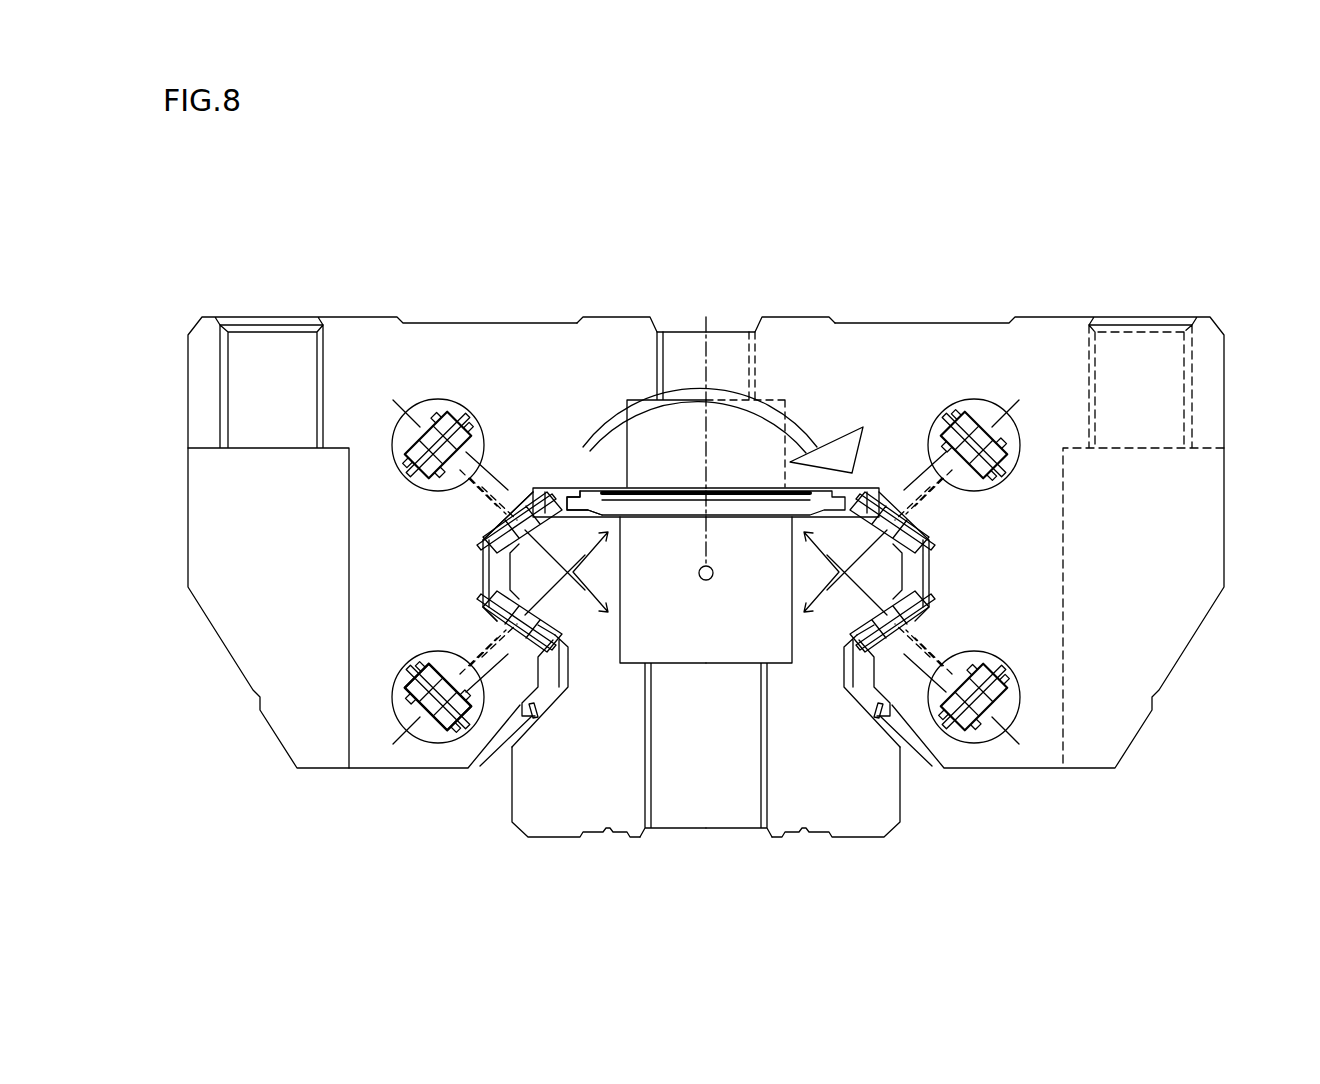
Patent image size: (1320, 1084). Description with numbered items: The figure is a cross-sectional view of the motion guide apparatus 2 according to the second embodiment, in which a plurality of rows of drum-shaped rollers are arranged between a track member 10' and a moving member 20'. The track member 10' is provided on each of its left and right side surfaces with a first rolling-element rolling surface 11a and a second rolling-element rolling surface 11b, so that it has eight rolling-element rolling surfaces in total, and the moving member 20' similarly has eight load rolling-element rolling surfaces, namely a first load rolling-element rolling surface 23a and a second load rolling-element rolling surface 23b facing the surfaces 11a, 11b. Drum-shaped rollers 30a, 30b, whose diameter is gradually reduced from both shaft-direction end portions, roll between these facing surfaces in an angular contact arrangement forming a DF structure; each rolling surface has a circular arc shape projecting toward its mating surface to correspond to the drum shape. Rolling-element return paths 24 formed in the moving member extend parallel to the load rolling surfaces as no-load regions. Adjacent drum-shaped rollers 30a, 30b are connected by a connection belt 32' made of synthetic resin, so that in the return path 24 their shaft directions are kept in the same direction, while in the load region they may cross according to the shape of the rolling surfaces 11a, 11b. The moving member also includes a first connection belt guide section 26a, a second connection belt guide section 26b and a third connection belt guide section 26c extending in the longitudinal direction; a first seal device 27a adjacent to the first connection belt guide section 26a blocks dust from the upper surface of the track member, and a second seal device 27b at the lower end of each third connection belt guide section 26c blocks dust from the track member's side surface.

The motion guide apparatus 2 is at (428, 198).
The track member 10' is at (765, 612).
The moving member 20' is at (743, 542).
The first rolling-element rolling surface 11a is at (545, 613).
The second rolling-element rolling surface 11b is at (532, 617).
The first load rolling-element rolling surface 23a is at (527, 650).
The second load rolling-element rolling surface 23b is at (410, 710).
The rolling-element return path 24 is at (433, 727).
The first connection belt guide section 26a is at (570, 487).
The second connection belt guide section 26b is at (483, 562).
The third connection belt guide section 26c is at (555, 670).
The first seal device 27a is at (628, 487).
The second seal device 27b is at (520, 718).
The drum-shaped roller 30a is at (977, 400).
The drum-shaped roller 30b is at (1012, 430).
The connection belt 32' is at (306, 733).